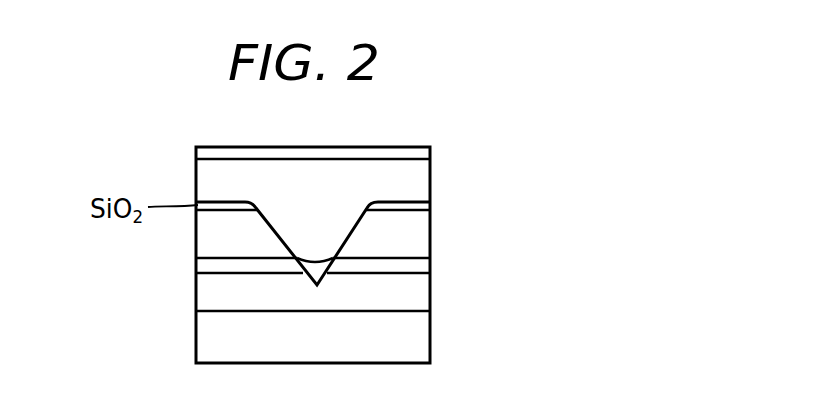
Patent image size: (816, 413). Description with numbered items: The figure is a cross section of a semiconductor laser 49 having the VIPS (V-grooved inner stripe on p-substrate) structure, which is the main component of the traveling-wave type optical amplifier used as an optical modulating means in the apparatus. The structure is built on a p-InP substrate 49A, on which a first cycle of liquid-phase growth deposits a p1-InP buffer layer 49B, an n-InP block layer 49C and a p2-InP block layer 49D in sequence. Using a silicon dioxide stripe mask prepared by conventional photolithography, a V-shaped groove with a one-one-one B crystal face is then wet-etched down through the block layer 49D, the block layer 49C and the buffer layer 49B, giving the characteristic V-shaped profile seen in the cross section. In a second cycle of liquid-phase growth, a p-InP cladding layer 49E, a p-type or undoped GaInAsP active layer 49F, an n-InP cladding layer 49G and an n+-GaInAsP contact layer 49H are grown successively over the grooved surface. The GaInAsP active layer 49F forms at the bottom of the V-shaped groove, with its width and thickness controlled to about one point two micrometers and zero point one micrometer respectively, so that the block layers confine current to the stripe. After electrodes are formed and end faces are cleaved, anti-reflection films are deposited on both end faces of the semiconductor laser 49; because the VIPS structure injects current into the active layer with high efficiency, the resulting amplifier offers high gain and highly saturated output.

The semiconductor laser 49 is at (176, 154).
The p-InP substrate 49A is at (420, 332).
The p1-InP buffer layer 49B is at (420, 288).
The n-InP block layer 49C is at (431, 263).
The p2-InP block layer 49D is at (415, 218).
The p-InP cladding layer 49E is at (318, 270).
The GaInAsP active layer 49F is at (320, 252).
The n-InP cladding layer 49G is at (418, 177).
The n+-GaInAsP contact layer 49H is at (430, 147).